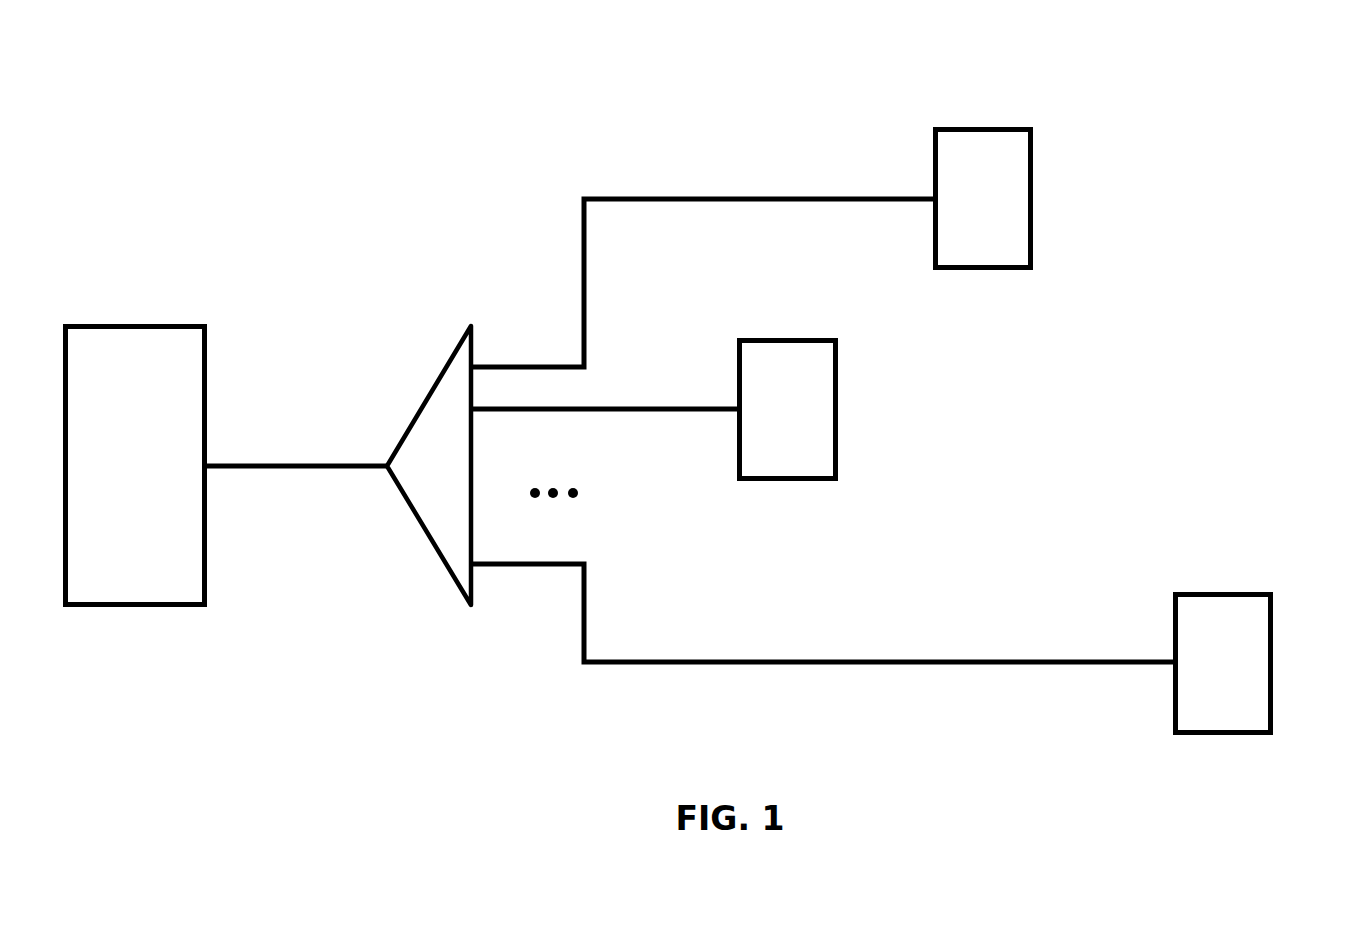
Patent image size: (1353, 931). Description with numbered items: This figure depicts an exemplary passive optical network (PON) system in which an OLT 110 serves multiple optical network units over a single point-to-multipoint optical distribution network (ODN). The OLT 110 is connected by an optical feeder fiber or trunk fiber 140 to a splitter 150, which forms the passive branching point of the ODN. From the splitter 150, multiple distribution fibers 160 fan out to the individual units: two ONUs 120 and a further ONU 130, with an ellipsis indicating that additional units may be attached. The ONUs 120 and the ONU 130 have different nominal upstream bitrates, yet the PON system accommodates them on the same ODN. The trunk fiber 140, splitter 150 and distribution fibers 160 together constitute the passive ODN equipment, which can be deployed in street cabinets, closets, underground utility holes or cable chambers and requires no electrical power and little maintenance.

The OLT 110 is at (120, 324).
The ONUs 120 is at (977, 127).
The ONU 130 is at (1215, 592).
The optical feeder fiber 140 is at (247, 468).
The splitter 150 is at (445, 367).
The distribution fibers 160 is at (640, 202).